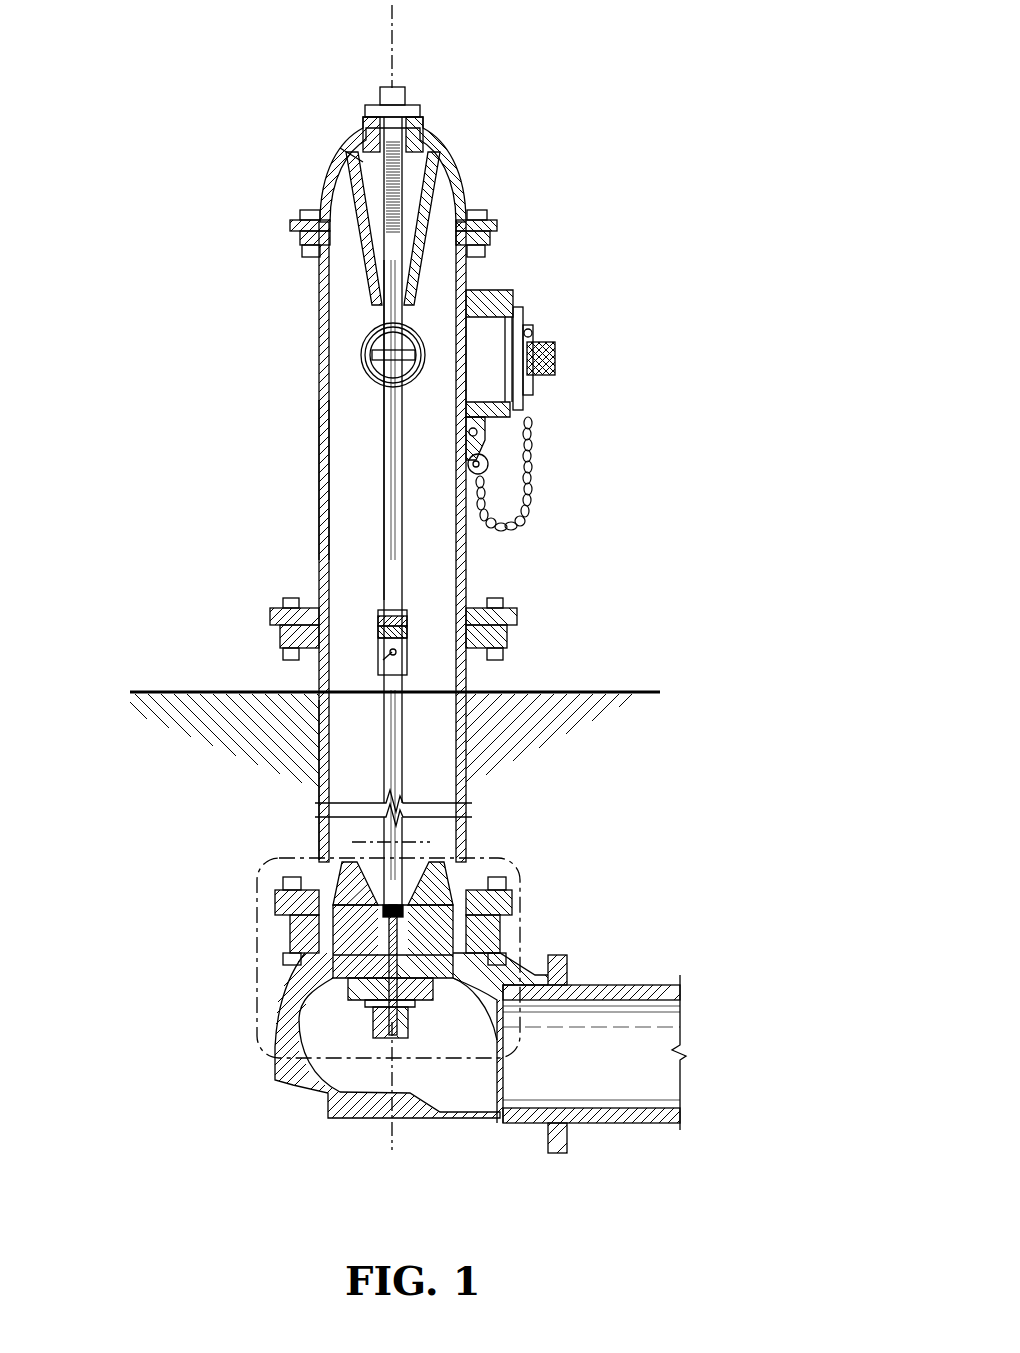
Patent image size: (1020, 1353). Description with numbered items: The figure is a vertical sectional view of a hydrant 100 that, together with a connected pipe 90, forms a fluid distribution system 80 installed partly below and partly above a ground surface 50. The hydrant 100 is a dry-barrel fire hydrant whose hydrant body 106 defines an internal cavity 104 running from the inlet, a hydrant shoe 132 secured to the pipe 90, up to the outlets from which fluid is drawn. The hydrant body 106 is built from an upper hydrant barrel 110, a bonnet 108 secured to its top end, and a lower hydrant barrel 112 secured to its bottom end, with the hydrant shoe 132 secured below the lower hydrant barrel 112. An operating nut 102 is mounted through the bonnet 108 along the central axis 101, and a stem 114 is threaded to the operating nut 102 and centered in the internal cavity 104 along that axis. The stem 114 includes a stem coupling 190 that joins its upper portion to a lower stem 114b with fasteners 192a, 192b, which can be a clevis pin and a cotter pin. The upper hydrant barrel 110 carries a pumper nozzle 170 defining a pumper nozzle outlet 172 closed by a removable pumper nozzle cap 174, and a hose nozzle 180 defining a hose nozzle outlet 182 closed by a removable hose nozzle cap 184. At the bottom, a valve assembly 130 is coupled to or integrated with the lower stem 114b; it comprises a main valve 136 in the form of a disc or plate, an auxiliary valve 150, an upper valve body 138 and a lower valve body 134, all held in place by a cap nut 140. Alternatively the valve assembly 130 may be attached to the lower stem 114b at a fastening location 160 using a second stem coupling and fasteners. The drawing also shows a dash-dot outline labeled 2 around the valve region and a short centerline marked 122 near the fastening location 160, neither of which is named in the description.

The valve assembly 2 is at (520, 895).
The ground surface 50 is at (620, 692).
The fluid distribution system 80 is at (708, 260).
The pipe 90 is at (618, 985).
The hydrant 100 is at (318, 290).
The central axis 101 is at (389, 42).
The operating nut 102 is at (396, 98).
The internal cavity 104 is at (308, 528).
The hydrant body 106 is at (320, 558).
The bonnet 108 is at (333, 152).
The upper hydrant barrel 110 is at (326, 325).
The lower hydrant barrel 112 is at (320, 796).
The stem 114 is at (388, 442).
The lower stem 114b is at (387, 764).
The break plane 122 is at (416, 841).
The valve assembly 130 is at (430, 1000).
The hydrant shoe 132 is at (320, 1086).
The lower valve body 134 is at (360, 960).
The main valve 136 is at (345, 960).
The upper valve body 138 is at (300, 913).
The cap nut 140 is at (388, 1040).
The auxiliary valve 150 is at (327, 950).
The fastening location 160 is at (472, 805).
The pumper nozzle 170 is at (512, 300).
The pumper nozzle outlet 172 is at (514, 358).
The pumper nozzle cap 174 is at (555, 368).
The hose nozzle 180 is at (372, 367).
The hose nozzle outlet 182 is at (372, 354).
The hose nozzle cap 184 is at (378, 378).
The stem coupling 190 is at (410, 628).
The fastener 192a is at (376, 618).
The fastener 192b is at (380, 655).